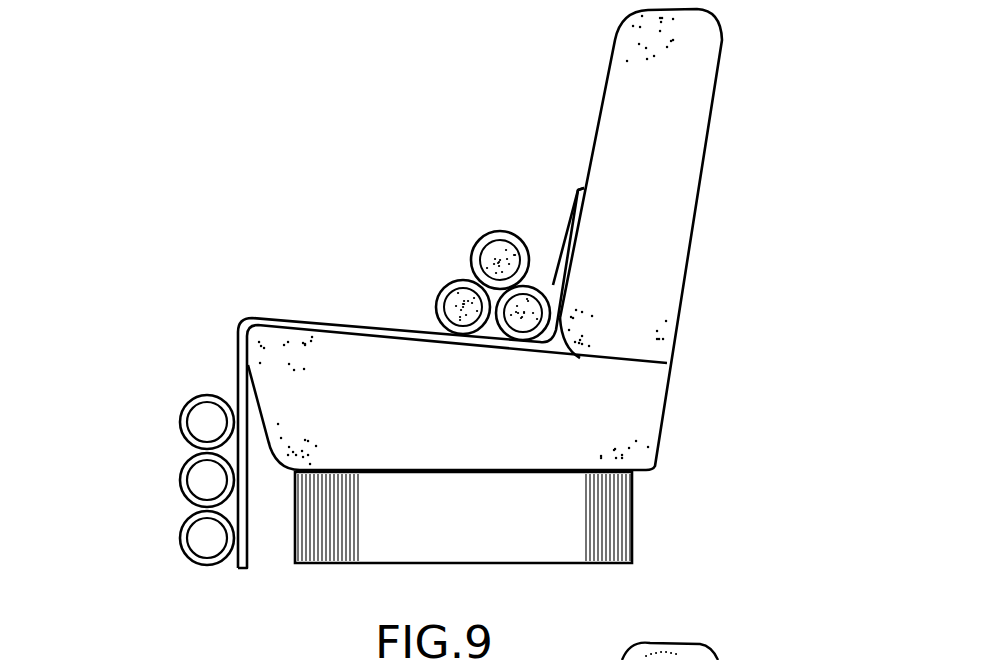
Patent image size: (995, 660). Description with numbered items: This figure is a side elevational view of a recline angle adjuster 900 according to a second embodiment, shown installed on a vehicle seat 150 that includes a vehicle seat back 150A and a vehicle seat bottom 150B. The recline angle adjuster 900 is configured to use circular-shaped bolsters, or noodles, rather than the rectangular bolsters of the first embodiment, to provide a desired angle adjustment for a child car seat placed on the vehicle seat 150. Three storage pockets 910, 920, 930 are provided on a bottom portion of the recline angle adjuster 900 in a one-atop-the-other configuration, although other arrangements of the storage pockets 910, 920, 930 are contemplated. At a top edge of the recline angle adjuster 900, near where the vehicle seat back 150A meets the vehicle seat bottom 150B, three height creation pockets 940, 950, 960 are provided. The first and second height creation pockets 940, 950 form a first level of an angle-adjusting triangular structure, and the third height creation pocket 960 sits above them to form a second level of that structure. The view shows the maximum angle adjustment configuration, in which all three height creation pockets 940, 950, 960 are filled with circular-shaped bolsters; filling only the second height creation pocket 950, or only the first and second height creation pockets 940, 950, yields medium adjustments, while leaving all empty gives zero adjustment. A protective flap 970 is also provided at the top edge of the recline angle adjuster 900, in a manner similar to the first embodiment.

The vehicle seat 150 is at (530, 286).
The vehicle seat back 150A is at (683, 178).
The vehicle seat bottom 150B is at (625, 391).
The recline angle adjuster 900 is at (290, 317).
The first storage pocket 910 is at (202, 420).
The second storage pocket 920 is at (202, 480).
The third storage pocket 930 is at (202, 540).
The first height creation pocket 940 is at (440, 293).
The second height creation pocket 950 is at (543, 290).
The third height creation pocket 960 is at (497, 232).
The protective flap 970 is at (571, 218).